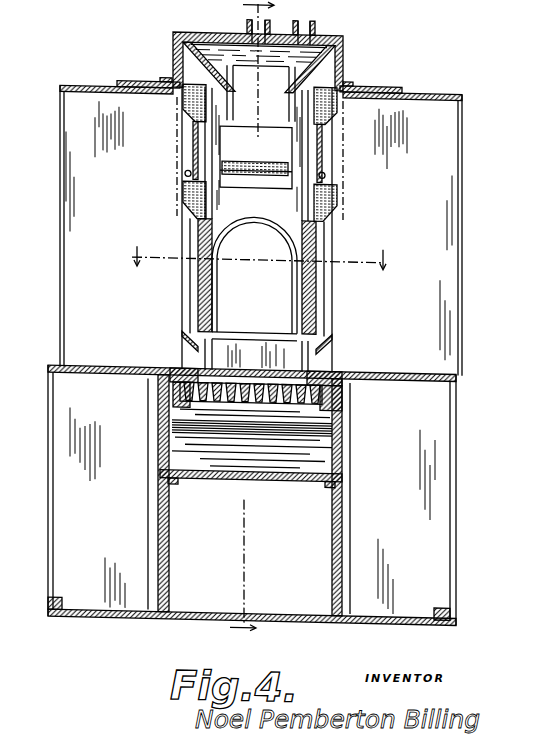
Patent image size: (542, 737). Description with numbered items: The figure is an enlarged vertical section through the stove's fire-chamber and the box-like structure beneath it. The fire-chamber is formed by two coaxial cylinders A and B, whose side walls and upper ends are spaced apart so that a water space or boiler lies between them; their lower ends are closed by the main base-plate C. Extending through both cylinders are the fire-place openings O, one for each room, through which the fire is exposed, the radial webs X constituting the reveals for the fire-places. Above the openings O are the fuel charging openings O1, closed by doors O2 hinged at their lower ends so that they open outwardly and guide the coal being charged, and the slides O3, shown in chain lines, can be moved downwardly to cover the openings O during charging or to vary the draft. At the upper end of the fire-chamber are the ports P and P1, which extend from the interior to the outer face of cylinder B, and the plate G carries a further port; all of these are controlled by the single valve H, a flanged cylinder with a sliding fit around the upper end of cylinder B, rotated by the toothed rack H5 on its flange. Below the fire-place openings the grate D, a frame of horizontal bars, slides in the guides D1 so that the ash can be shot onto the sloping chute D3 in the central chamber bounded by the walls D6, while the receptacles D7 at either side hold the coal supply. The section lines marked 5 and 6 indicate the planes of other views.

The port P is at (176, 58).
The port P1 is at (325, 64).
The valve H is at (165, 78).
The toothed rack H5 is at (352, 75).
The plate G is at (427, 83).
The radial webs X is at (78, 130).
The openings O is at (323, 230).
The fuel charging openings O1 is at (337, 114).
The doors O2 is at (363, 140).
The slides O3 is at (370, 177).
The cylinder A is at (313, 280).
The cylinder B is at (328, 312).
The section line 5- 5 is at (248, 259).
The main base-plate C is at (353, 375).
The guides D1 is at (377, 423).
The grate D is at (257, 386).
The sloping plate or chute D3 is at (255, 456).
The walls D6 is at (330, 555).
The receptacles D7 is at (252, 495).
The section line 6- 6 is at (243, 582).